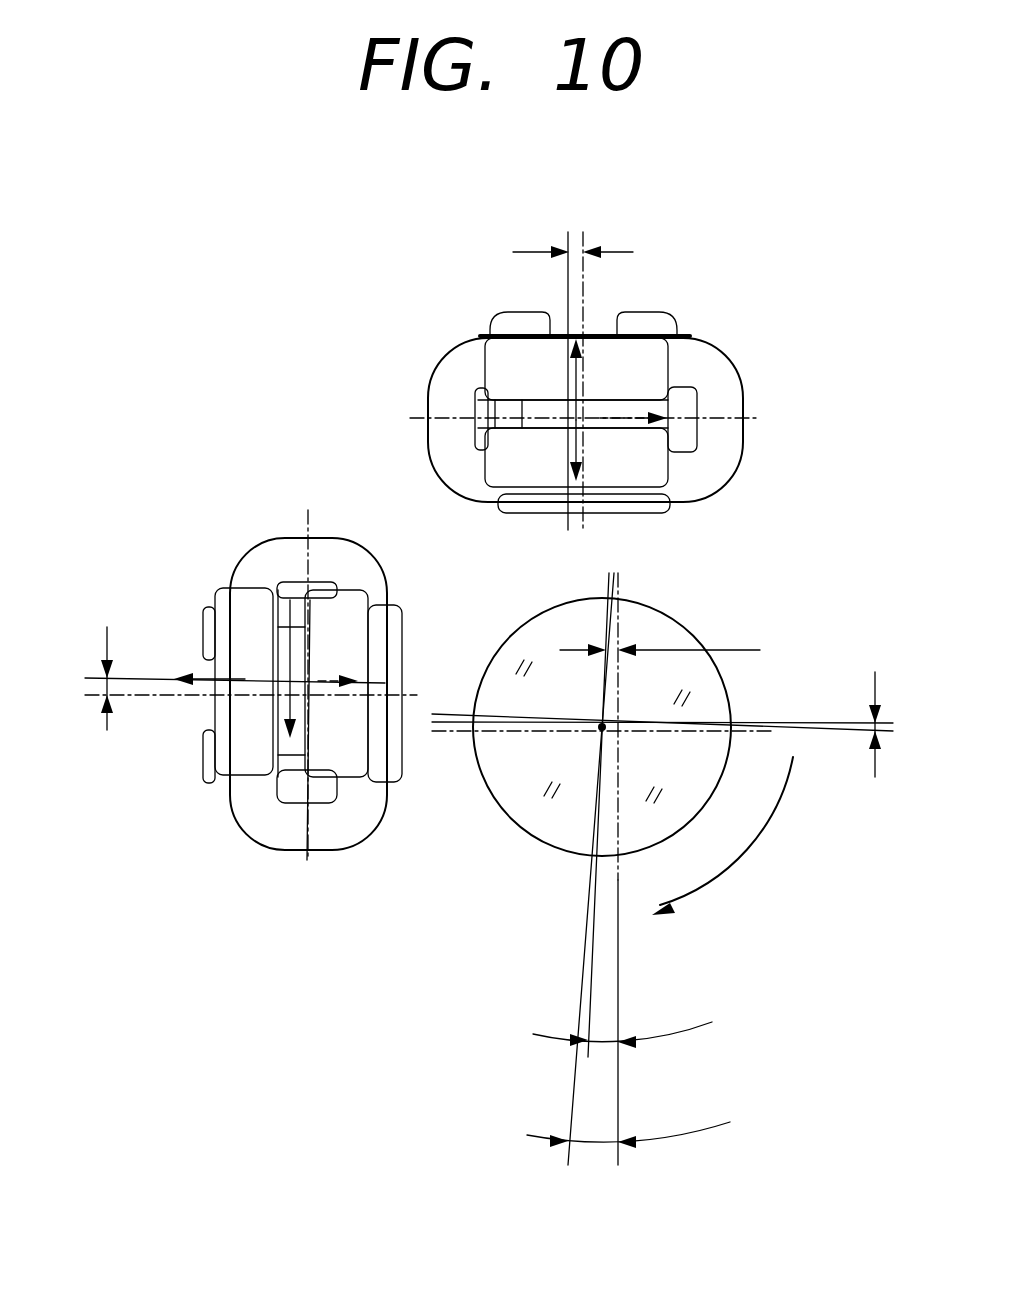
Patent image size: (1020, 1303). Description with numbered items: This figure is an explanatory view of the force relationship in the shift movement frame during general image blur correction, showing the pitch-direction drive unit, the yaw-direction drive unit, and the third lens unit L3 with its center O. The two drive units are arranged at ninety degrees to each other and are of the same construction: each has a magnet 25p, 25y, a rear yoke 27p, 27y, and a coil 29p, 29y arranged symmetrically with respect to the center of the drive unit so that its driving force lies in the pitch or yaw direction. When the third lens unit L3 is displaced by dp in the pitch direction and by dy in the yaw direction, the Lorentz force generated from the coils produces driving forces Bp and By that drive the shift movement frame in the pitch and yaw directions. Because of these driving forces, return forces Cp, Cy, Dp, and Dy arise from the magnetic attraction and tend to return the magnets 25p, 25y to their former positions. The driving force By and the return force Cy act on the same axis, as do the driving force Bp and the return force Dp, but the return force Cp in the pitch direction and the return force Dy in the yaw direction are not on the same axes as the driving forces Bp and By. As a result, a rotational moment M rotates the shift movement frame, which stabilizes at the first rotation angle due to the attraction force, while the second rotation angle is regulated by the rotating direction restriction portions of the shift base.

The magnet 25p is at (507, 365).
The rear yoke 27p is at (525, 322).
The coil 29p is at (723, 452).
The driving force Bp is at (580, 388).
The return force Cp is at (617, 413).
The return force Dp is at (573, 435).
The magnet 25y is at (250, 608).
The rear yoke 27y is at (203, 753).
The coil 29y is at (278, 837).
The driving force By is at (233, 677).
The return force Cy is at (318, 677).
The return force Dy is at (283, 697).
The third lens unit L3 is at (542, 822).
The center O is at (587, 705).
The rotational moment M is at (760, 840).
The displacement in the yaw direction dy is at (660, 629).
The displacement in the pitch direction dp is at (909, 724).